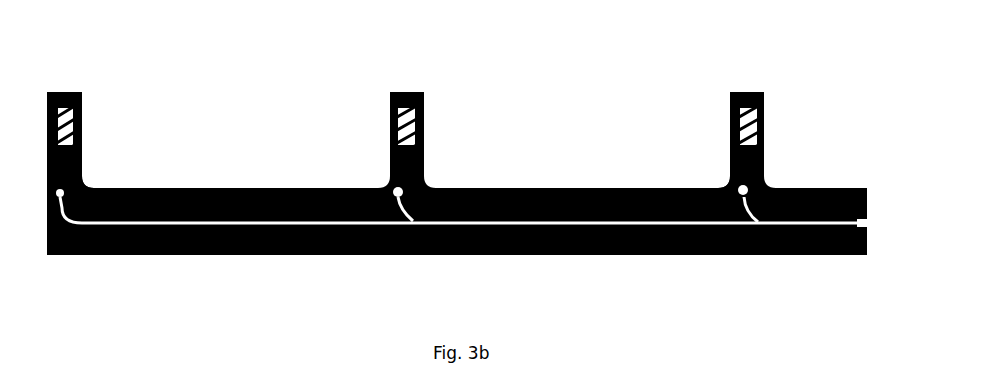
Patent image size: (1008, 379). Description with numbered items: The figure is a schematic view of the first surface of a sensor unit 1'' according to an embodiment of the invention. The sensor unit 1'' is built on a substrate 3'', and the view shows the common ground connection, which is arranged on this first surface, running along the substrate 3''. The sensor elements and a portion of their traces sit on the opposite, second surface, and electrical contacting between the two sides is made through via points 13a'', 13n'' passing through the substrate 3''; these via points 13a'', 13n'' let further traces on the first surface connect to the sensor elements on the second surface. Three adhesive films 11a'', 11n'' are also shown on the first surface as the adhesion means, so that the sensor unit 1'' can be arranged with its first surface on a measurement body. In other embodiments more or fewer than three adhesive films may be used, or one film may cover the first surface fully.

The sensor unit 1'' is at (457, 173).
The substrate 3'' is at (457, 207).
The adhesive film 11a'' is at (95, 140).
The adhesive film 11n'' is at (778, 140).
The via point 13a'' is at (100, 188).
The via point 13n'' is at (716, 185).